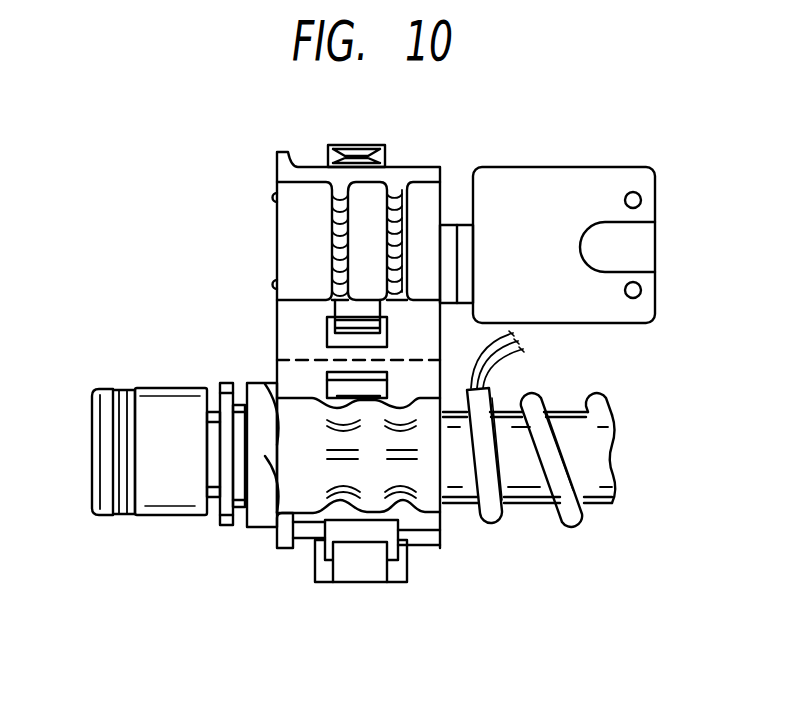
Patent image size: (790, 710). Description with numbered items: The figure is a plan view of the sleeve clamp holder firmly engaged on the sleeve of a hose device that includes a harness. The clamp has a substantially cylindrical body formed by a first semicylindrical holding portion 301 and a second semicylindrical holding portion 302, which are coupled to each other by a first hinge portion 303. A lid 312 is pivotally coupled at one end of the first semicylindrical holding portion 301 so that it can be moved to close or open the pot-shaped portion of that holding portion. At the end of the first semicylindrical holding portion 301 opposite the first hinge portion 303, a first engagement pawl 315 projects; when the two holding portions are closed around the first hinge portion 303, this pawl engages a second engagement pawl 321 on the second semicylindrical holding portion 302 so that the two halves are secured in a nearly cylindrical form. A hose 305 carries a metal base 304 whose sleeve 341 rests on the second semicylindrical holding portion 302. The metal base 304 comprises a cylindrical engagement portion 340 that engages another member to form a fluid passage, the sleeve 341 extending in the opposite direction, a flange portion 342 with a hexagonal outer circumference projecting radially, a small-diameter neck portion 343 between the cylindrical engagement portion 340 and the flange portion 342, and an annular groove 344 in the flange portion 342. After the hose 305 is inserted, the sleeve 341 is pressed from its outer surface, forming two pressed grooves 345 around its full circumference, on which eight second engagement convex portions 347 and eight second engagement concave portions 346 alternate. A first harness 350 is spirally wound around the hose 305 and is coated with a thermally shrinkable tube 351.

The first semicylindrical holding portion 301 is at (290, 225).
The second semicylindrical holding portion 302 is at (277, 543).
The first hinge portion 303 is at (290, 358).
The metal base 304 is at (158, 378).
The hose 305 is at (460, 492).
The lid 312 is at (612, 312).
The first engagement pawl 315 is at (358, 146).
The second engagement pawl 321 is at (372, 570).
The cylindrical engagement portion 340 is at (147, 397).
The sleeve 341 is at (302, 497).
The flange portion 342 is at (255, 382).
The neck portion 343 is at (213, 497).
The annular groove 344 is at (238, 383).
The pressed grooves 345 is at (415, 407).
The second engagement concave portions 346 is at (347, 473).
The second engagement convex portions 347 is at (403, 483).
The first harness 350 is at (500, 512).
The thermally shrinkable tube 351 is at (603, 502).